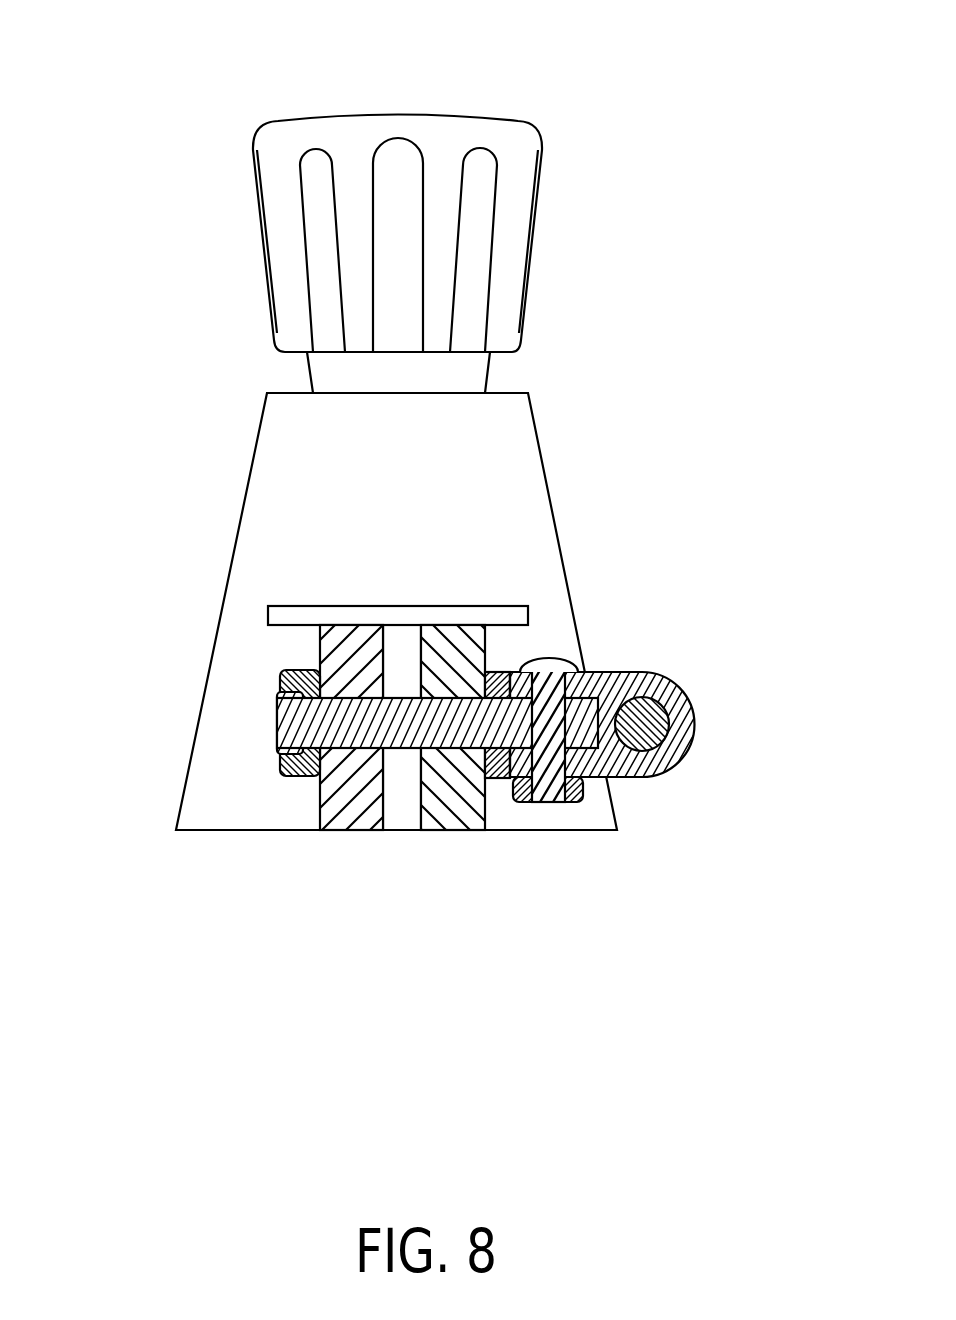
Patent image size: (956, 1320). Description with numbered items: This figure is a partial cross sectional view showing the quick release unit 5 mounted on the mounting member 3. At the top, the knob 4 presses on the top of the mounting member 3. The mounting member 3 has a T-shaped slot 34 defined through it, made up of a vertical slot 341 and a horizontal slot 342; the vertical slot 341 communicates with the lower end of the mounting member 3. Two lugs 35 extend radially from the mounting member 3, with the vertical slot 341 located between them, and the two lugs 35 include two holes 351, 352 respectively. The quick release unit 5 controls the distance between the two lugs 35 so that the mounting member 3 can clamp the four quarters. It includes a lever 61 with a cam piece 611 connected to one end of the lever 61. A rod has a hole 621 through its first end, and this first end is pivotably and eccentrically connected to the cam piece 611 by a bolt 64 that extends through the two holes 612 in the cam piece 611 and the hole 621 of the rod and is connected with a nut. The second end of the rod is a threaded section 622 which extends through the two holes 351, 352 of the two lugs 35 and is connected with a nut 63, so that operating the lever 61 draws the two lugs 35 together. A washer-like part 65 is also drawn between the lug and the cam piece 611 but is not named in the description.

The mounting member 3 is at (535, 420).
The knob 4 is at (475, 110).
The quick release unit 5 is at (436, 809).
The T-shaped slot 34 is at (525, 641).
The vertical slot 341 is at (398, 665).
The horizontal slot 342 is at (477, 615).
The lugs 35 is at (373, 808).
The hole 351 is at (394, 752).
The hole 352 is at (334, 755).
The lever 61 is at (641, 725).
The cam piece 611 is at (513, 667).
The holes 612 is at (552, 659).
The hole 621 is at (604, 780).
The threaded section 622 is at (281, 686).
The nut 63 is at (295, 760).
The bolt 64 is at (551, 806).
The washer 65 is at (497, 778).